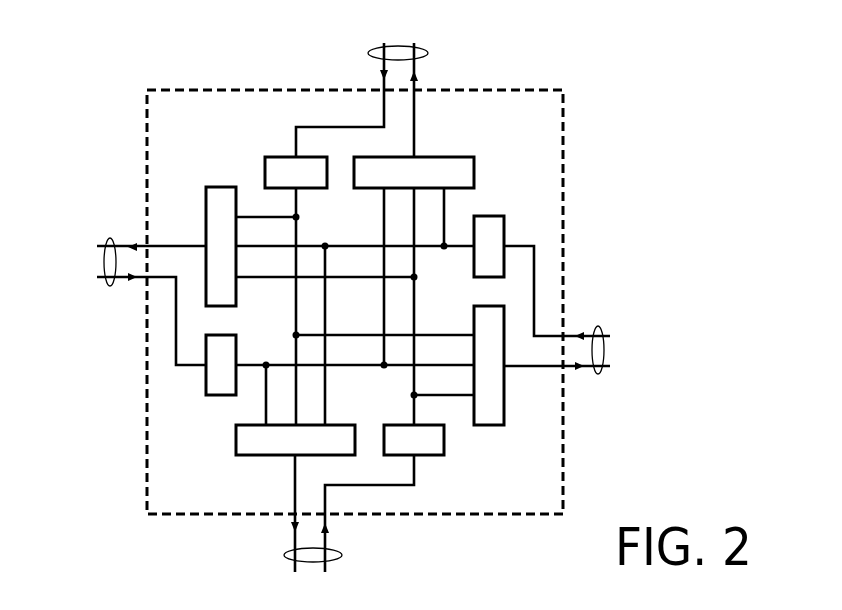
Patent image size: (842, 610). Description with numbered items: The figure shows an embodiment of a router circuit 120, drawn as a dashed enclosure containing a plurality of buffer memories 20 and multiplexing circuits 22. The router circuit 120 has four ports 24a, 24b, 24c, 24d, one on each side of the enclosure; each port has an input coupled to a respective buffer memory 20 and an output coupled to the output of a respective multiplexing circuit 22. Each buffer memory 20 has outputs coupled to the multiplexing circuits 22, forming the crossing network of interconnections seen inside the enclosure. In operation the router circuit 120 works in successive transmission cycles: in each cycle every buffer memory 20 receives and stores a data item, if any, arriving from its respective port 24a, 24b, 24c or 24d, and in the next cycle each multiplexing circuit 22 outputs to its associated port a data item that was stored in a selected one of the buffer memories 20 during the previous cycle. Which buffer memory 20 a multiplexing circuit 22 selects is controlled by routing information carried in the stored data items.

The router circuit 120 is at (147, 131).
The buffer memory 20 is at (272, 156).
The multiplexing circuit 22 is at (218, 185).
The port 24a is at (110, 287).
The port 24b is at (368, 53).
The port 24c is at (598, 326).
The port 24d is at (284, 555).